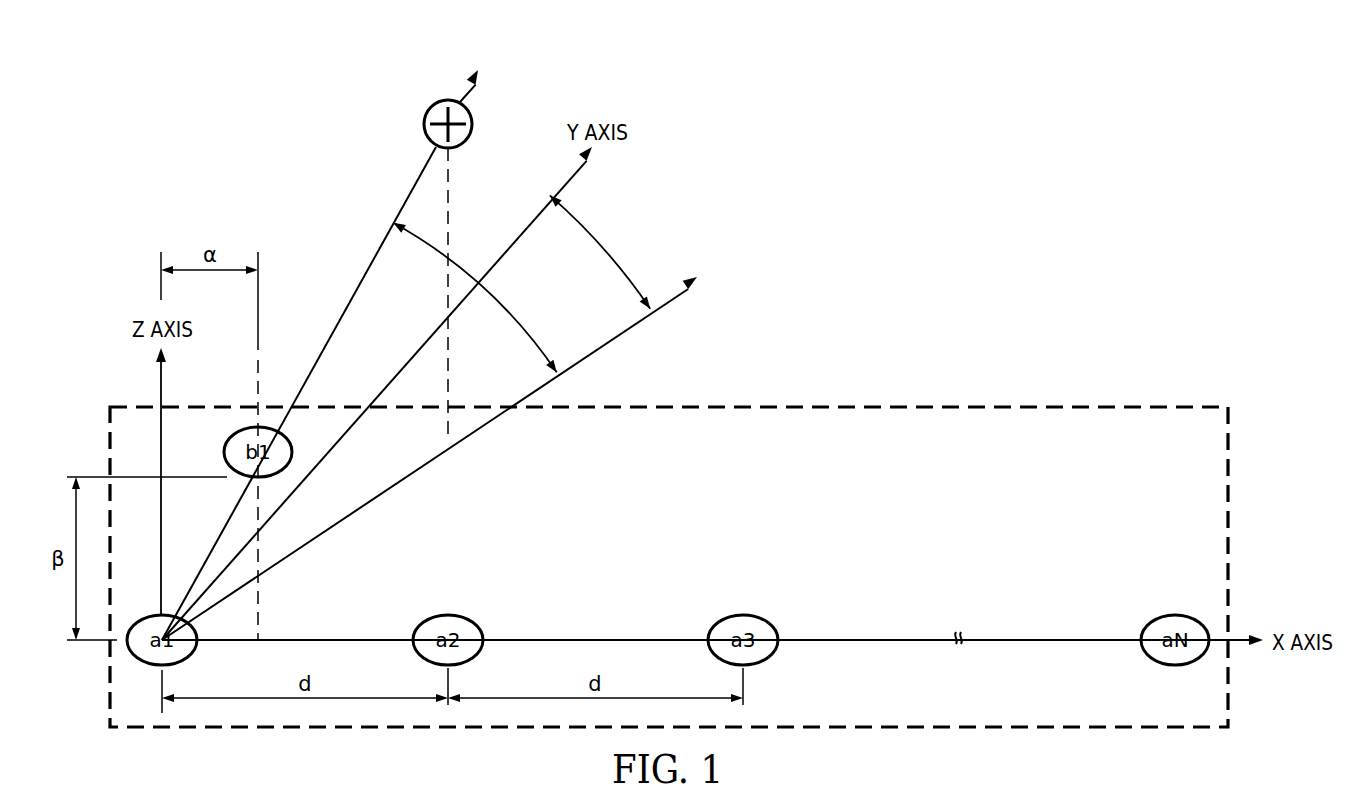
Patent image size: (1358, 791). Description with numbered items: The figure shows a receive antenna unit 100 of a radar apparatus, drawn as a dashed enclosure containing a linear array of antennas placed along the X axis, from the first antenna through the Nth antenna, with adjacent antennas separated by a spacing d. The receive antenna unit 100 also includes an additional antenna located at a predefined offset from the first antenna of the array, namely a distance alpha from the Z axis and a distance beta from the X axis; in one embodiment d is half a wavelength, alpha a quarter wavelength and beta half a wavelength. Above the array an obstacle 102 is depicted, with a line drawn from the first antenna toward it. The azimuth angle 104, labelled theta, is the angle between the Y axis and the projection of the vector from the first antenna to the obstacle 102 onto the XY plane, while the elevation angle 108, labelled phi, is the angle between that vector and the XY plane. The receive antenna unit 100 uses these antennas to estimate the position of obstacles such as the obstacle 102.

The receive antenna unit 100 is at (1070, 398).
The obstacle 102 is at (434, 107).
The azimuth angle 104 is at (604, 253).
The elevation angle 108 is at (516, 320).